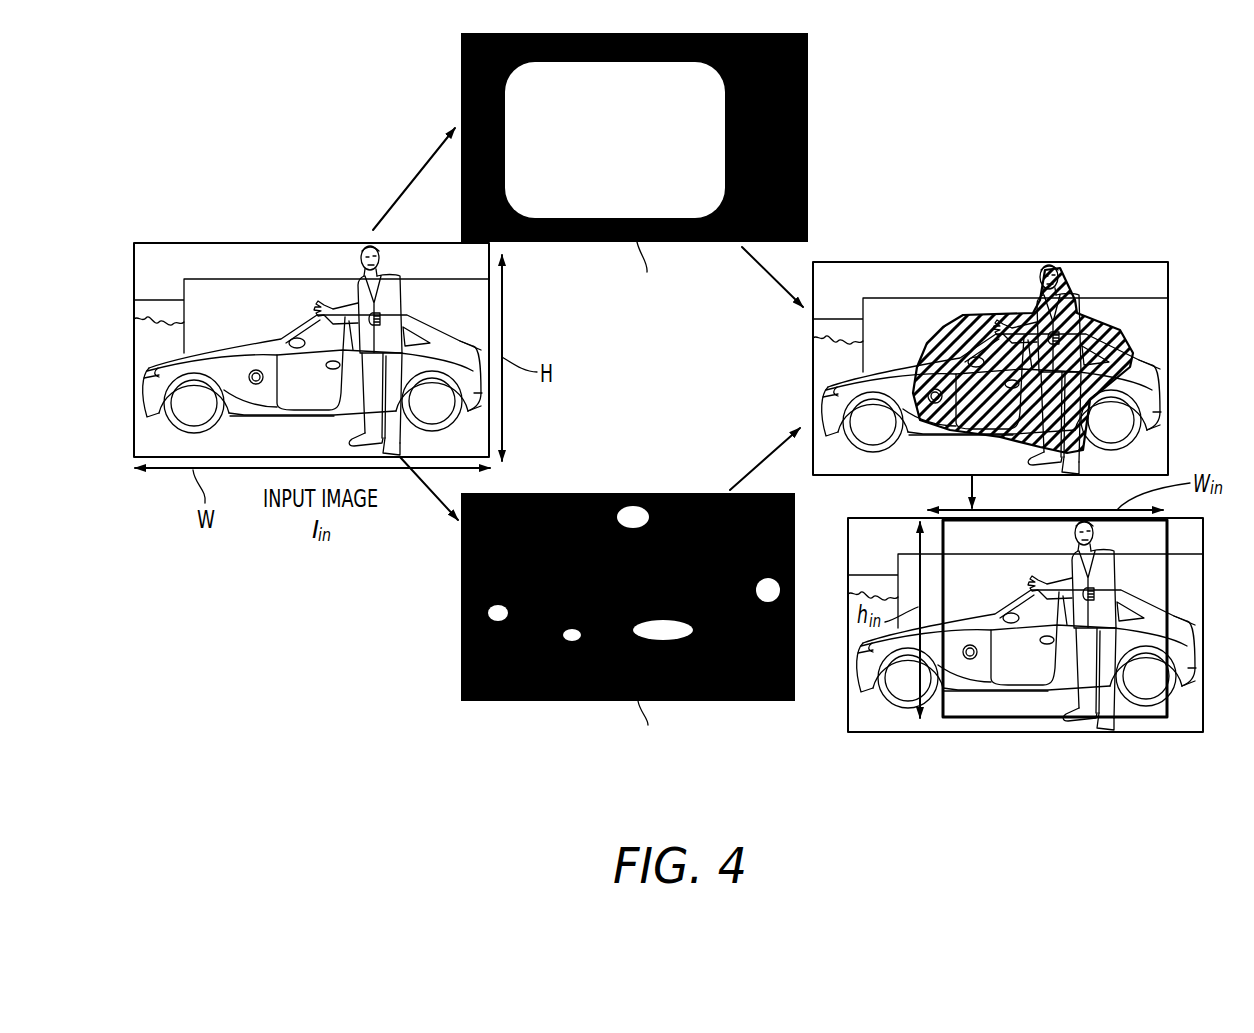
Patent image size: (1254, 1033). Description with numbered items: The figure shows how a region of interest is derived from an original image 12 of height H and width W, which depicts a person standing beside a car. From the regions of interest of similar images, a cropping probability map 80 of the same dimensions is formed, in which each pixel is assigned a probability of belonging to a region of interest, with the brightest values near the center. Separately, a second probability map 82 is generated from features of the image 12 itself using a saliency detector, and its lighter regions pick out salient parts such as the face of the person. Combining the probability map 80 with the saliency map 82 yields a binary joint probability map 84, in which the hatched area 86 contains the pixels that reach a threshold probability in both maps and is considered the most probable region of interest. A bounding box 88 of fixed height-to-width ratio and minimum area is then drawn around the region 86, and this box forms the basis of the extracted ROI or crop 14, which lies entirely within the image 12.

The original image 12 is at (217, 272).
The ROI 14 is at (1026, 698).
The probability map 80 is at (454, 94).
The second probability map 82 is at (642, 472).
The binary joint probability map 84 is at (1004, 261).
The hatched area 86 is at (982, 312).
The bounding box 88 is at (1148, 726).